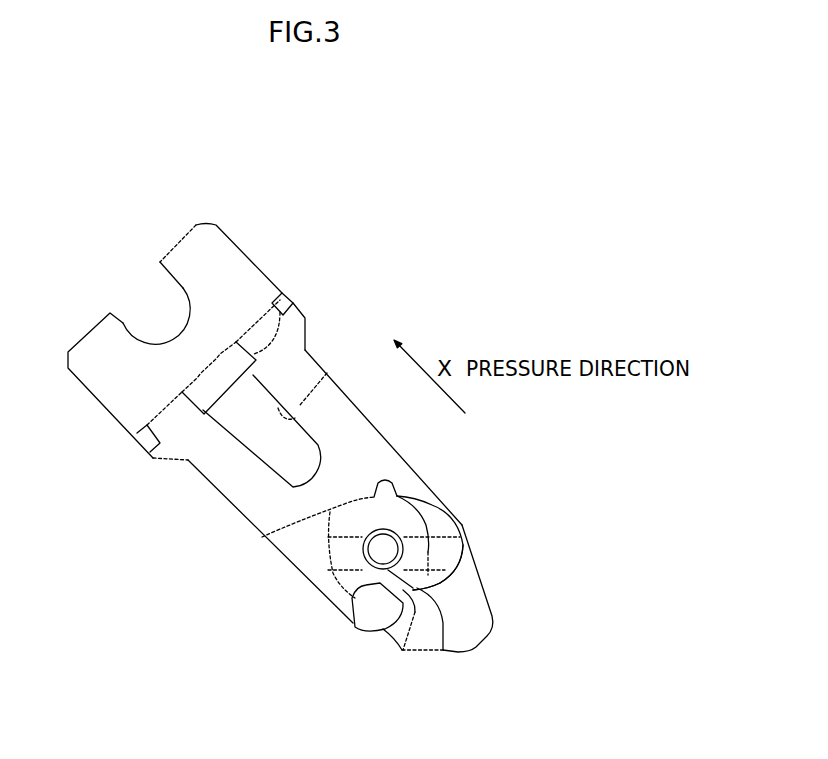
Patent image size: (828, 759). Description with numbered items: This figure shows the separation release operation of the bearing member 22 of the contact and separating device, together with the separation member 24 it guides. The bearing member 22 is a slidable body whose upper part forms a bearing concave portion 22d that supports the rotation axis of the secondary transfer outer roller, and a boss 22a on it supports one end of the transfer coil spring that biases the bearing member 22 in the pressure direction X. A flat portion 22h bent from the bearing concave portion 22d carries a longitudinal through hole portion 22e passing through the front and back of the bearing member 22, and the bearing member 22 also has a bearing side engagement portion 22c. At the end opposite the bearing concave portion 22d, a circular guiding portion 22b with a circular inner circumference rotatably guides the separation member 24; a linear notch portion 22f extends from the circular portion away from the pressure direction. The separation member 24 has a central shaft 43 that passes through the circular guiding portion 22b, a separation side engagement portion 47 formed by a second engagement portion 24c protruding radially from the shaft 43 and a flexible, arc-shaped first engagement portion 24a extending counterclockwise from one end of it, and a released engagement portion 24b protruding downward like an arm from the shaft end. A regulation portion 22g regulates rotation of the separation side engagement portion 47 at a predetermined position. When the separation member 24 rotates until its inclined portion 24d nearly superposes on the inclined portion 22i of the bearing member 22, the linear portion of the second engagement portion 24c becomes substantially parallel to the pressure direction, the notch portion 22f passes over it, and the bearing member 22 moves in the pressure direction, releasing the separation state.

The bearing member 22 is at (253, 228).
The boss 22a is at (278, 297).
The circular guiding portion 22b is at (262, 537).
The bearing side engagement portion 22c is at (350, 620).
The bearing concave portion 22d is at (127, 323).
The longitudinal through hole portion 22e is at (322, 372).
The notch portion 22f is at (445, 651).
The regulation portion 22g is at (402, 651).
The flat portion 22h is at (343, 412).
The inclined portion 22i is at (452, 520).
The separation member 24 is at (465, 658).
The first engagement portion 24a is at (390, 473).
The released engagement portion 24b is at (484, 638).
The second engagement portion 24c is at (337, 558).
The inclined portion 24d is at (462, 567).
The shaft 43 is at (430, 588).
The separation side engagement portion 47 is at (417, 496).